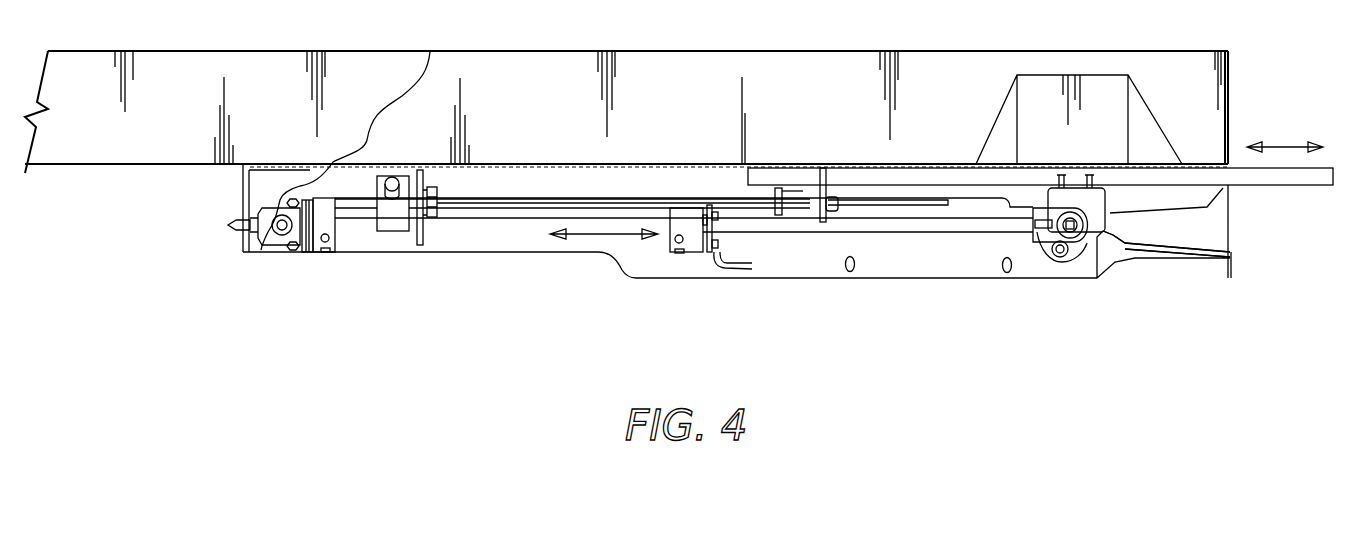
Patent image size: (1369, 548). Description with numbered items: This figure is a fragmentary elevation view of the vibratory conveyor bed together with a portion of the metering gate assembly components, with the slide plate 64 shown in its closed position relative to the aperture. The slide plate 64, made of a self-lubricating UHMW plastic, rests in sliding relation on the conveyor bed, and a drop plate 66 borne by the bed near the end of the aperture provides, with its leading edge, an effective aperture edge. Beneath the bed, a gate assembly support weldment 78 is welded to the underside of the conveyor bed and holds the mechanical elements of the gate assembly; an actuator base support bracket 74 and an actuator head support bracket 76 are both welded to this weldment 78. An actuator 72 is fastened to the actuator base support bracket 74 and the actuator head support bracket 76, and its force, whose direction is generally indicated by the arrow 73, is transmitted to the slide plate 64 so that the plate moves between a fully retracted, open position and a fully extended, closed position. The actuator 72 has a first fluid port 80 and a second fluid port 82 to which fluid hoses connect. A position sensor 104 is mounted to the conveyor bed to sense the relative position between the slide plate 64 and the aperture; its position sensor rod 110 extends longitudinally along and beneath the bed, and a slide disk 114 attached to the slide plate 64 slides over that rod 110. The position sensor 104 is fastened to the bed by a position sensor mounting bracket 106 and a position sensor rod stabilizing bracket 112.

The slide plate 64 is at (1320, 168).
The drop plate 66 is at (1187, 245).
The actuator 72 is at (632, 253).
The arrow 73 is at (583, 234).
The actuator base support bracket 74 is at (238, 207).
The actuator head support bracket 76 is at (738, 272).
The gate assembly support weldment 78 is at (257, 187).
The first fluid port 80 is at (323, 256).
The second fluid port 82 is at (680, 255).
The position sensor 104 is at (390, 231).
The position sensor mounting bracket 106 is at (432, 236).
The position sensor rod 110 is at (510, 197).
The position sensor rod stabilizing bracket 112 is at (823, 168).
The slide disk 114 is at (777, 188).